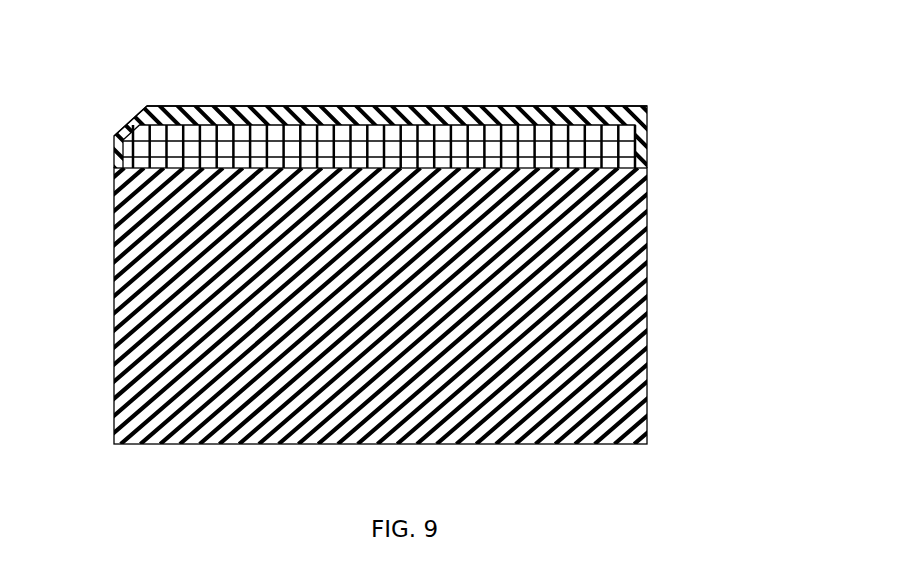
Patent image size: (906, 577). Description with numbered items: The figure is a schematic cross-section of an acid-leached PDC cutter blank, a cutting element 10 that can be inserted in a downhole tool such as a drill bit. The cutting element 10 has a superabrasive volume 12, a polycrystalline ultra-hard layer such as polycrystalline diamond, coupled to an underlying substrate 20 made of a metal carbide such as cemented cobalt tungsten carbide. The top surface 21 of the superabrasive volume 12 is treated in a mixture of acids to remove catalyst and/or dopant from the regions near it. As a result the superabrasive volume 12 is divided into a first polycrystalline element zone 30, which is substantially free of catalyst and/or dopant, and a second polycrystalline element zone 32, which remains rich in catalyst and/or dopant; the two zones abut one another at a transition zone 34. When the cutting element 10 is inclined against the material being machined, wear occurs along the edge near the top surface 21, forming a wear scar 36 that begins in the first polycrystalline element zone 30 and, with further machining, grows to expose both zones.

The cutting element 10 is at (453, 223).
The superabrasive volume 12 is at (402, 86).
The substrate 20 is at (647, 323).
The top surface 21 is at (320, 106).
The first polycrystalline element zone 30 is at (368, 86).
The second polycrystalline element zone 32 is at (498, 140).
The transition zone 34 is at (583, 122).
The wear scar 36 is at (135, 113).